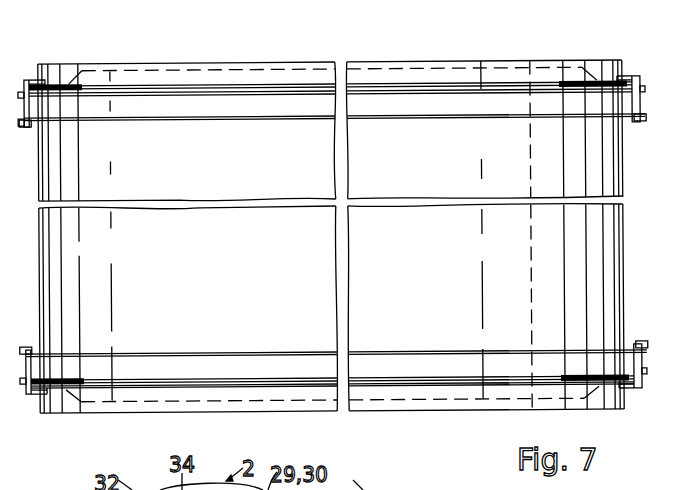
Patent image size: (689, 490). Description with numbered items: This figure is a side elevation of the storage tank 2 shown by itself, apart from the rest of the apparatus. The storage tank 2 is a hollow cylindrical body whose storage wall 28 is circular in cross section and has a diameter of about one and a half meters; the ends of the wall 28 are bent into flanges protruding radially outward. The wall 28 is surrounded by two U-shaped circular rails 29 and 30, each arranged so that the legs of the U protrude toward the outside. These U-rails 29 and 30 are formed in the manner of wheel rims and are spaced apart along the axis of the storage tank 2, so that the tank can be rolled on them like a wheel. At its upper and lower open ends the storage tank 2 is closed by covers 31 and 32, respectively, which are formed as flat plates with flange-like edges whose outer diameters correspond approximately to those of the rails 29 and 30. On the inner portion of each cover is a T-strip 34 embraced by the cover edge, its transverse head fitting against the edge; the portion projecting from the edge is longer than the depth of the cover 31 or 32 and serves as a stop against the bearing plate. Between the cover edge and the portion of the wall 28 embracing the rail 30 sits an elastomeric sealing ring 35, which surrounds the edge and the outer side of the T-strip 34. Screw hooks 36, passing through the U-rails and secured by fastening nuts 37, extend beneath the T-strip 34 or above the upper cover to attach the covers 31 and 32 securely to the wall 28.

The storage tank 2 is at (304, 415).
The wall 28 is at (135, 148).
The U-shaped circular rail 29 is at (270, 103).
The U-shaped circular rail 30 is at (177, 367).
The cover 31 is at (172, 66).
The cover 32 is at (208, 400).
The T-strip 34 is at (420, 395).
The sealing ring 35 is at (497, 385).
The screw hook 36 is at (48, 97).
The fastening nut 37 is at (30, 127).